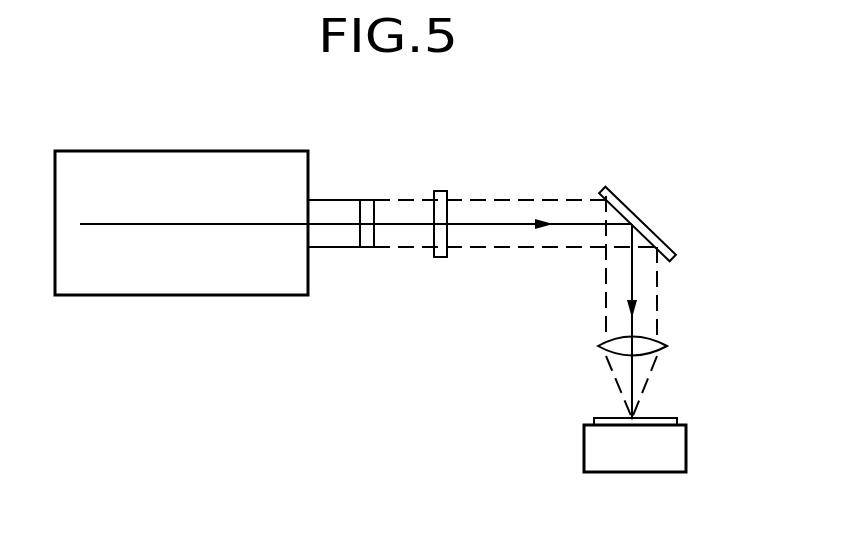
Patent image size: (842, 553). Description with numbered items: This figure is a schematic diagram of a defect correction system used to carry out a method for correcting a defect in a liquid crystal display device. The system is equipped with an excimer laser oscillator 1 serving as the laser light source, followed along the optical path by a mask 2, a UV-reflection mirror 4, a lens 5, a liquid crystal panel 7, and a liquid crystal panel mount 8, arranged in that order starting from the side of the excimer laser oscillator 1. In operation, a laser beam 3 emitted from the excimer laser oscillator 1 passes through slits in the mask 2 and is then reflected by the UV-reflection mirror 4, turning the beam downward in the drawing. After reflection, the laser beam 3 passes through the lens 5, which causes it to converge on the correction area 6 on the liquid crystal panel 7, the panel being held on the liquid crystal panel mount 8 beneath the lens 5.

The excimer laser oscillator 1 is at (180, 162).
The mask 2 is at (441, 190).
The laser beam 3 is at (507, 222).
The UV-reflection mirror 4 is at (640, 208).
The lens 5 is at (612, 338).
The correction area 6 is at (628, 417).
The liquid crystal panel 7 is at (595, 422).
The liquid crystal panel mount 8 is at (597, 456).